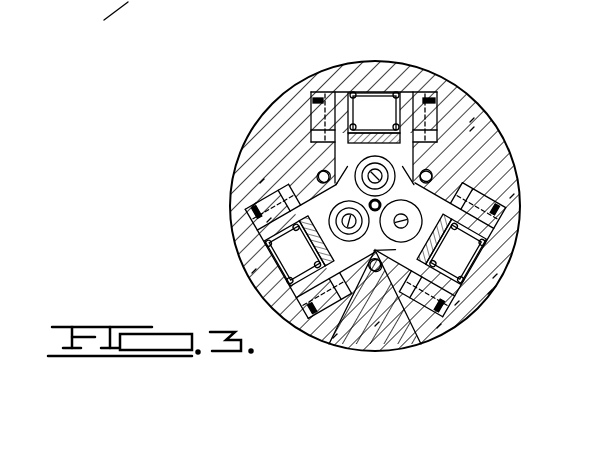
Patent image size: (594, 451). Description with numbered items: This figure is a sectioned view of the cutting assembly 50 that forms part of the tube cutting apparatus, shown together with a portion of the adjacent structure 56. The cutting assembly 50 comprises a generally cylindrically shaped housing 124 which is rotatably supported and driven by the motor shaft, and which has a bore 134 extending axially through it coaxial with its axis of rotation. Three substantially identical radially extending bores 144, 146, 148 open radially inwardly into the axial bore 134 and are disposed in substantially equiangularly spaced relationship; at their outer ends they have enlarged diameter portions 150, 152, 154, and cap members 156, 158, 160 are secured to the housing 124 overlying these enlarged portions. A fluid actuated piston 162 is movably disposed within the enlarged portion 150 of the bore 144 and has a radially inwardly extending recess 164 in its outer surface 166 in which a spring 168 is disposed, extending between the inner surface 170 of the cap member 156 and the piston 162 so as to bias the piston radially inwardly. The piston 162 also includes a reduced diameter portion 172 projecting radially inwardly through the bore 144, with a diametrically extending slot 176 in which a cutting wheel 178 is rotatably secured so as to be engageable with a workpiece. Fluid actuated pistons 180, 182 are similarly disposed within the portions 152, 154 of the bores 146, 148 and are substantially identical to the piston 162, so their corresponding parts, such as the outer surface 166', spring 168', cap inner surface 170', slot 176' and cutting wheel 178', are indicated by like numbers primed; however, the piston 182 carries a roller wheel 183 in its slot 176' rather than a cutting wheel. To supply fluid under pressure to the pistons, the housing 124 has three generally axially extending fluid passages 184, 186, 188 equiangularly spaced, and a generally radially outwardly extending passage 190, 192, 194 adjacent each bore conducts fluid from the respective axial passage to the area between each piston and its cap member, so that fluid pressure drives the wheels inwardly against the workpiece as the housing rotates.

The cutting assembly 50 is at (186, 180).
The support member 56 is at (100, 20).
The housing 124 is at (470, 122).
The bore 134 is at (508, 181).
The radially extending bore 144 is at (470, 131).
The radially extending bore 146 is at (260, 183).
The radially extending bore 148 is at (398, 336).
The enlarged diameter portion 150 is at (470, 110).
The enlarged diameter portion 152 is at (252, 207).
The enlarged diameter portion 154 is at (437, 328).
The cap member 156 is at (388, 92).
The cap member 158 is at (252, 273).
The cap member 160 is at (493, 278).
The fluid actuated piston 162 is at (338, 90).
The recess 164 is at (422, 92).
The outer surface 166 is at (273, 77).
The outer surface 166' is at (366, 263).
The spring 168 is at (372, 67).
The spring 168' is at (390, 264).
The inner surface 170 is at (370, 81).
The inner surface 170' is at (369, 255).
The reduced diameter portion 172 is at (317, 177).
The slot 176 is at (273, 125).
The slot 176' is at (518, 209).
The cutting wheel 178 is at (453, 140).
The cutting wheel 178' is at (262, 279).
The fluid actuated piston 180 is at (267, 222).
The fluid actuated piston 182 is at (455, 305).
The roller wheel 183 is at (488, 294).
The axially extending fluid passage 184 is at (332, 162).
The axially extending fluid passage 186 is at (375, 326).
The axially extending fluid passage 188 is at (500, 168).
The radially outwardly extending passage 190 is at (308, 93).
The radially outwardly extending passage 192 is at (333, 338).
The radially outwardly extending passage 194 is at (510, 198).